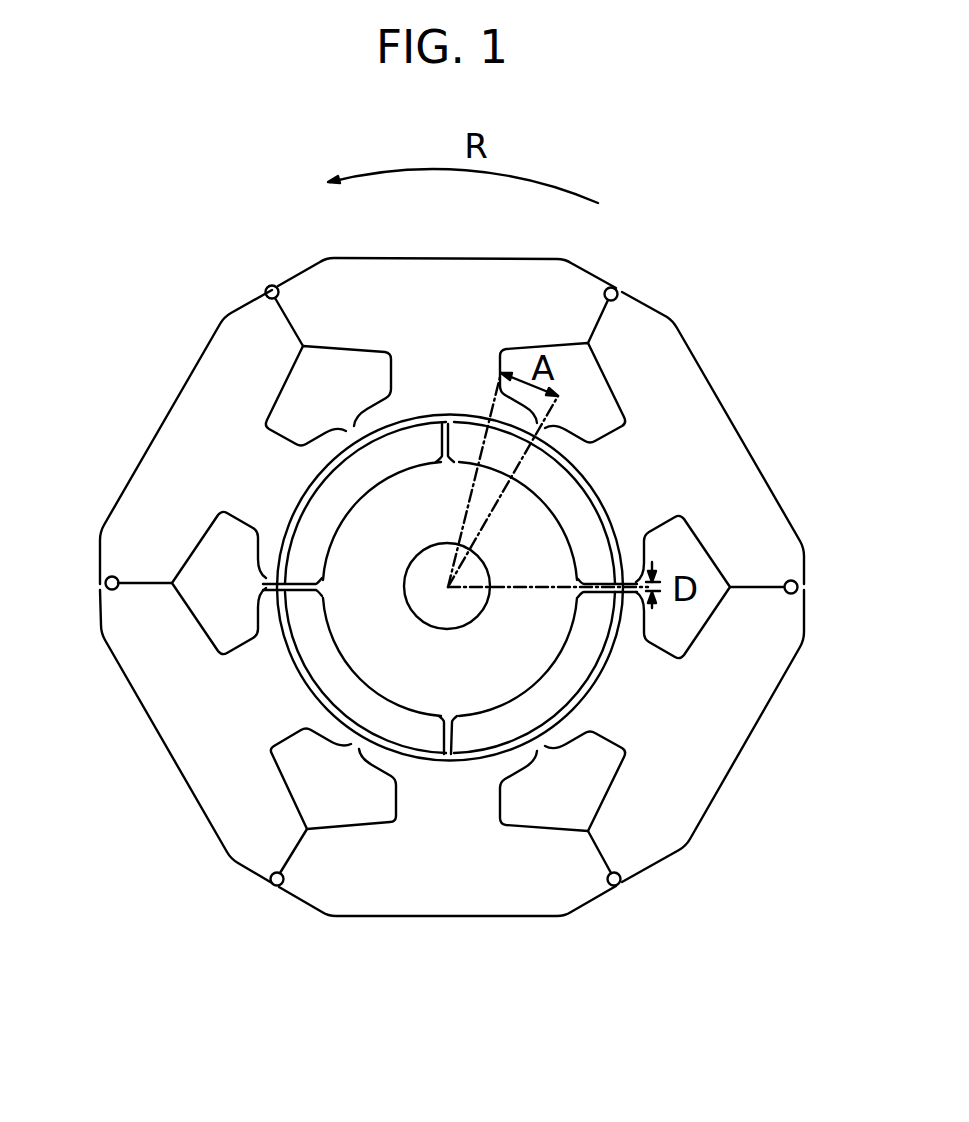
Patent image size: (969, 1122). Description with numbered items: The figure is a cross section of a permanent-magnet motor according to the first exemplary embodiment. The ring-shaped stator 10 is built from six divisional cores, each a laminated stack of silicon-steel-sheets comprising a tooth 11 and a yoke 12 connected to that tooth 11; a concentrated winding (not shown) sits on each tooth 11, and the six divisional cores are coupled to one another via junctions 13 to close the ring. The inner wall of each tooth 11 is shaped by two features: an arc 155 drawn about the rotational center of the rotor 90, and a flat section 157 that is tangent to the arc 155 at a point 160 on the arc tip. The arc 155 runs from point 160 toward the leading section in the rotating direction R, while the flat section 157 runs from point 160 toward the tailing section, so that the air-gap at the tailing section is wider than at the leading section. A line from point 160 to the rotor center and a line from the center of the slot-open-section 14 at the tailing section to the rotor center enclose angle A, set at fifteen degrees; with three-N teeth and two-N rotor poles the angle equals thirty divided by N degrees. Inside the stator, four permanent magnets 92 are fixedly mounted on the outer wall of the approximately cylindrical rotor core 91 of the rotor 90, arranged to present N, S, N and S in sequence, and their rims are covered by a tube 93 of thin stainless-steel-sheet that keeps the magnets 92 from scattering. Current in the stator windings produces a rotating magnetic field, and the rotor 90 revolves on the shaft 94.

The stator 10 is at (683, 337).
The tooth 11 is at (623, 480).
The yoke 12 is at (723, 467).
The junction 13 is at (768, 591).
The slot-open-section 14 is at (657, 600).
The rotor 90 is at (290, 492).
The rotor core 91 is at (393, 660).
The permanent magnet 92 is at (475, 732).
The tube 93 is at (540, 750).
The shaft 94 is at (421, 587).
The arc 155 is at (437, 407).
The flat section 157 is at (535, 415).
The point 160 is at (483, 410).